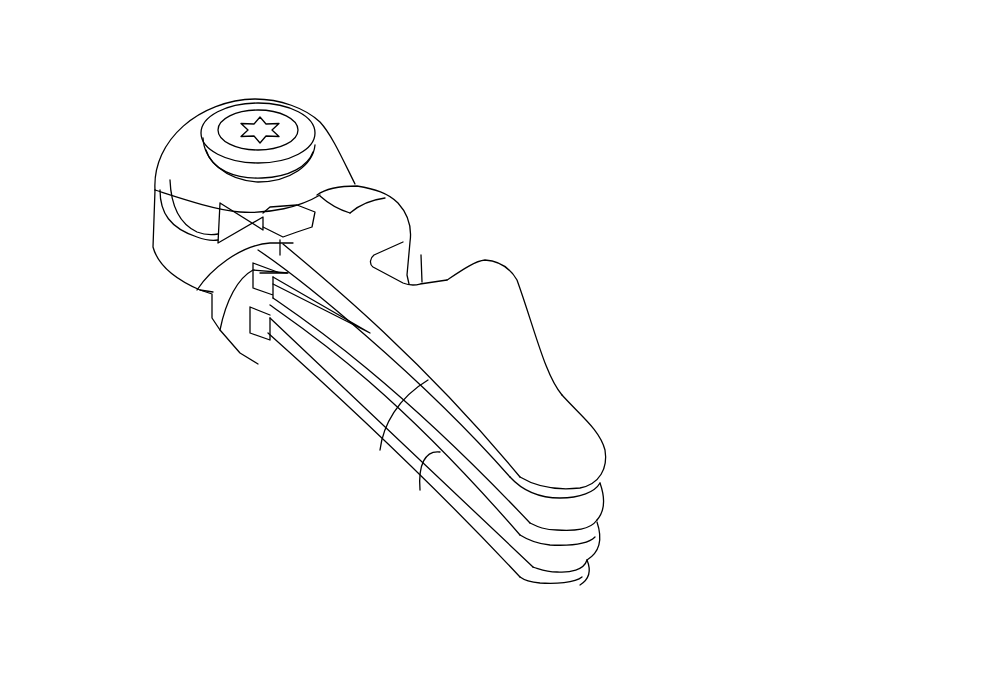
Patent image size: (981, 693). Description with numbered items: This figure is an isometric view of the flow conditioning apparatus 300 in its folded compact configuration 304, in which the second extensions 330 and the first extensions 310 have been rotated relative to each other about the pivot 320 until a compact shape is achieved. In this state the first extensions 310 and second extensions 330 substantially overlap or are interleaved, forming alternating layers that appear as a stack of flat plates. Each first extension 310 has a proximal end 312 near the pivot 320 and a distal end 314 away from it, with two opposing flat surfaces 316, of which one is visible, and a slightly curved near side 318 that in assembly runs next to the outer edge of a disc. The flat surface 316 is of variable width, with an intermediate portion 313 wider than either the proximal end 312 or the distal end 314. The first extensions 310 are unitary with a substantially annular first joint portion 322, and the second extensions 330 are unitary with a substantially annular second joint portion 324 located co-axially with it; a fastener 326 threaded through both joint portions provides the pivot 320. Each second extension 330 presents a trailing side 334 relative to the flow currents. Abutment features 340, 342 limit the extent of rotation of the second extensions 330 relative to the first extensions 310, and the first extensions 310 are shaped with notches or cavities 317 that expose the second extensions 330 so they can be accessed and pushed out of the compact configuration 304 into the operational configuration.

The flow conditioning apparatus 300 is at (618, 122).
The compact configuration 304 is at (258, 545).
The first extension 310 is at (460, 517).
The proximal end 312 is at (213, 293).
The intermediate portion 313 is at (503, 305).
The distal end 314 is at (572, 460).
The flat surface 316 is at (491, 374).
The notch or cavity 317 is at (421, 256).
The near side 318 is at (393, 430).
The pivot 320 is at (228, 88).
The first joint portion 322 is at (317, 124).
The second joint portion 324 is at (170, 173).
The fastener 326 is at (262, 103).
The second extension 330 is at (280, 330).
The trailing side 334 is at (222, 325).
The abutment feature 340 is at (153, 215).
The abutment feature 342 is at (370, 207).